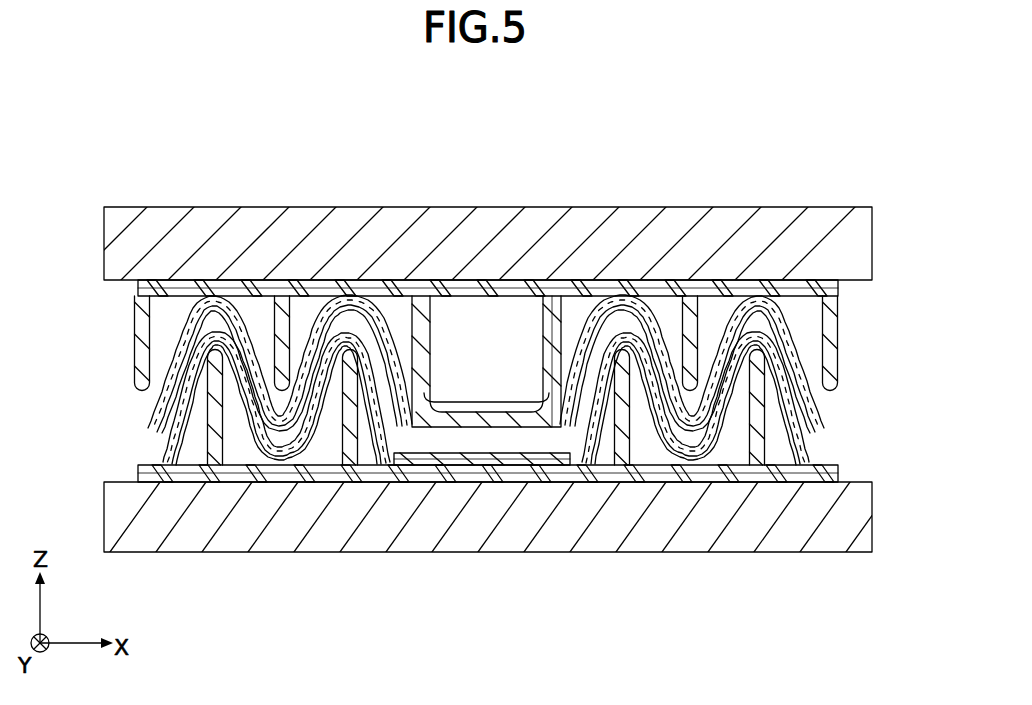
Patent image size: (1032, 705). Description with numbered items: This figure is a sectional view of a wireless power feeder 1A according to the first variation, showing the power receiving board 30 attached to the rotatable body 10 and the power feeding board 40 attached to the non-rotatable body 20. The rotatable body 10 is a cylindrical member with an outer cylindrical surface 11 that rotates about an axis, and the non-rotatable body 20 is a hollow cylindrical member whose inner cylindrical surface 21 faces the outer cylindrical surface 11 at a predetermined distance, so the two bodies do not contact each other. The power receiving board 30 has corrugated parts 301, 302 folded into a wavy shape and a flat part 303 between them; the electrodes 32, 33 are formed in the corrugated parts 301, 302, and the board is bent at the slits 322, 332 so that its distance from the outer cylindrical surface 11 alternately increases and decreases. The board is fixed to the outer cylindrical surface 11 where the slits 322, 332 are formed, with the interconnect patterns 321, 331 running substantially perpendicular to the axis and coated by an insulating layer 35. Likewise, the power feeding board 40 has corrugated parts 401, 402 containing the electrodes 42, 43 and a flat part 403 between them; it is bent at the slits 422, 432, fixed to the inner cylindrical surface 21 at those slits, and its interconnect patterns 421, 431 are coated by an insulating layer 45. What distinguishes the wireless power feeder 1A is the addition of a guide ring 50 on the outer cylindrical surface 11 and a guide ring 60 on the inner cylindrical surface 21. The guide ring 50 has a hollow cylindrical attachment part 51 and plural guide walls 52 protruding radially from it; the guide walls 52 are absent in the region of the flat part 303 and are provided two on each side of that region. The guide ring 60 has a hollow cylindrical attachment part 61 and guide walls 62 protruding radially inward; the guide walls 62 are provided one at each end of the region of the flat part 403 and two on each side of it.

The wireless power feeder 1A is at (52, 179).
The rotatable body 10 is at (862, 516).
The outer cylindrical surface 11 is at (853, 470).
The non-rotatable body 20 is at (862, 246).
The inner cylindrical surface 21 is at (843, 292).
The power receiving board 30 is at (489, 471).
The corrugated part 301 is at (228, 471).
The electrode 32 is at (228, 398).
The corrugated part 302 is at (747, 471).
The electrode 33 is at (747, 398).
The flat part 303 is at (427, 470).
The insulating layer 35 is at (597, 373).
The power feeding board 40 is at (478, 293).
The corrugated part 401 is at (242, 293).
The electrode 42 is at (239, 364).
The corrugated part 402 is at (736, 293).
The electrode 43 is at (736, 364).
The flat part 403 is at (487, 397).
The insulating layer 45 is at (413, 320).
The guide ring 50 is at (488, 541).
The attachment part 51 is at (502, 470).
The guide wall 52 is at (620, 423).
The guide ring 60 is at (488, 267).
The attachment part 61 is at (500, 294).
The guide wall 62 is at (543, 330).
The interconnect pattern 321 is at (221, 405).
The slit 322 is at (210, 335).
The interconnect pattern 331 is at (753, 405).
The slit 332 is at (767, 333).
The interconnect pattern 421 is at (163, 400).
The slit 422 is at (217, 307).
The interconnect pattern 431 is at (807, 400).
The slit 432 is at (770, 310).